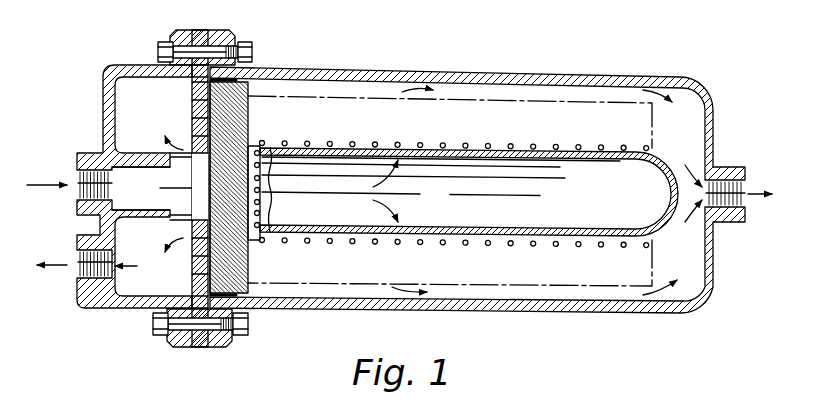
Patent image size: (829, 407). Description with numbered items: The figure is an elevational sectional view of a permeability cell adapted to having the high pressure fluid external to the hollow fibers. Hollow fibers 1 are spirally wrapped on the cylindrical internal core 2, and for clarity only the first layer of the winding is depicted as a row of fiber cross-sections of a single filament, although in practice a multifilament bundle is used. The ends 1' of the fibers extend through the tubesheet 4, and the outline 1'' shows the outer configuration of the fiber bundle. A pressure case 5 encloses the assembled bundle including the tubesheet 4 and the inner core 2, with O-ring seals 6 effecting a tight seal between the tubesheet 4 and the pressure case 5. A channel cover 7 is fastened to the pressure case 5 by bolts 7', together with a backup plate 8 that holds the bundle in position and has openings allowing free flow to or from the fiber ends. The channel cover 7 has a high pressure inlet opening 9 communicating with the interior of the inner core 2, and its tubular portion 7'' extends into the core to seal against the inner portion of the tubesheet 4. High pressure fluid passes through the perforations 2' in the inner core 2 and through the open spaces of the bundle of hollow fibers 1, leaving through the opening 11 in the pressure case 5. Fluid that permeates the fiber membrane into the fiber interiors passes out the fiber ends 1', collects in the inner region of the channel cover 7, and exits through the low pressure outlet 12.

The hollow fibers 1 is at (469, 192).
The ends of the fibers 1' is at (187, 184).
The outline of the bundle of fibers 1'' is at (450, 191).
The internal core 2 is at (454, 192).
The perforations 2' is at (389, 200).
The tubesheet 4 is at (248, 104).
The pressure case 5 is at (473, 72).
The O-ring seals 6 is at (244, 80).
The channel cover 7 is at (134, 159).
The bolts 7' is at (224, 192).
The tubular portion 7'' is at (156, 186).
The backup plate 8 is at (192, 90).
The high pressure inlet opening 9 is at (77, 190).
The opening 11 is at (745, 203).
The low pressure outlet 12 is at (77, 270).